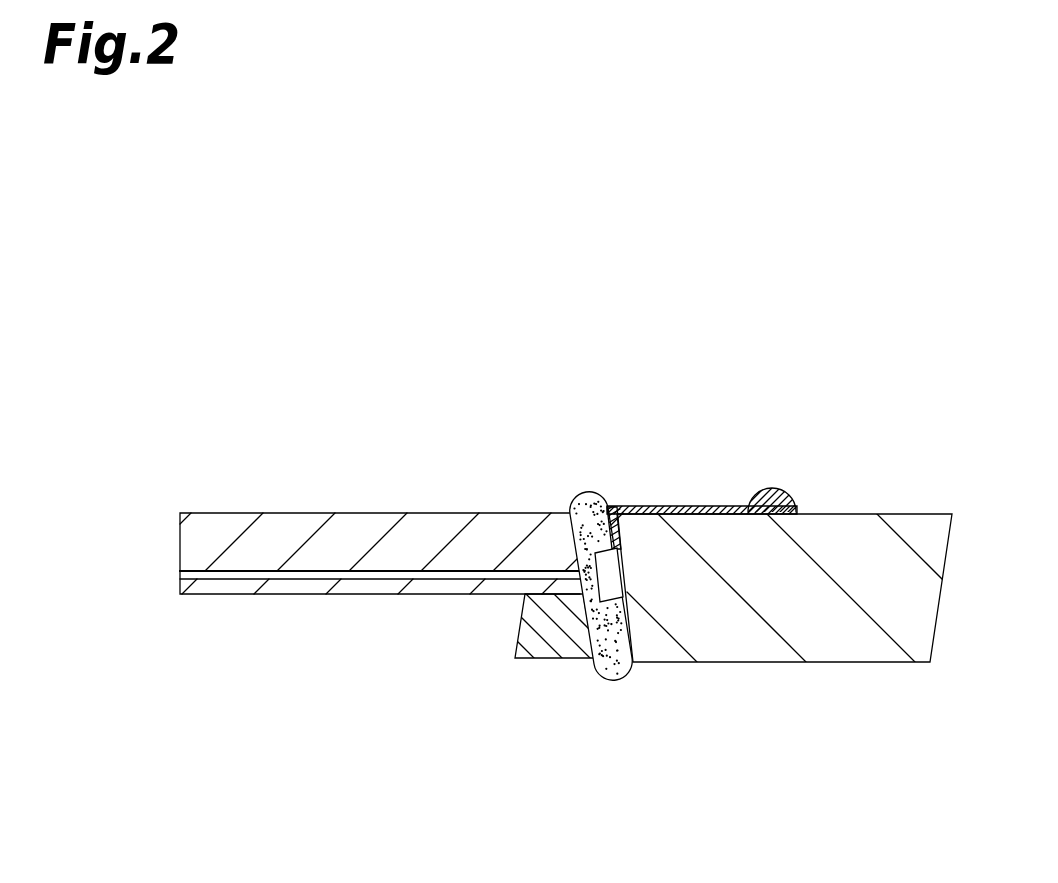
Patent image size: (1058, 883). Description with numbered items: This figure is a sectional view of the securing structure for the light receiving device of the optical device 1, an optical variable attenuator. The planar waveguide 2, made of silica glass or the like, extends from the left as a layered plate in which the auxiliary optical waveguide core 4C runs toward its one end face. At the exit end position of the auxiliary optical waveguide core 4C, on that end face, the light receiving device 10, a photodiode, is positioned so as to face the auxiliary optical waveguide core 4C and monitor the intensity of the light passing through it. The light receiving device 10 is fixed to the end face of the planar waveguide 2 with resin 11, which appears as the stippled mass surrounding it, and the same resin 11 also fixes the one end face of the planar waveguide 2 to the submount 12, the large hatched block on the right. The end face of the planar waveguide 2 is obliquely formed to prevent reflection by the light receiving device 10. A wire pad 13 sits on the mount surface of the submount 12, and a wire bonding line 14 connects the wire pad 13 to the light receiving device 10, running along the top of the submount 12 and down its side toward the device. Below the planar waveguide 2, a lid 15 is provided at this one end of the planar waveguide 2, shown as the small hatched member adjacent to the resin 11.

The optical device 1 is at (203, 400).
The planar waveguide 2 is at (388, 532).
The auxiliary optical waveguide core 4C is at (305, 571).
The light receiving device 10 is at (613, 598).
The resin 11 is at (618, 672).
The submount 12 is at (907, 525).
The wire pad 13 is at (772, 490).
The wire bonding line 14 is at (668, 506).
The lid 15 is at (533, 643).